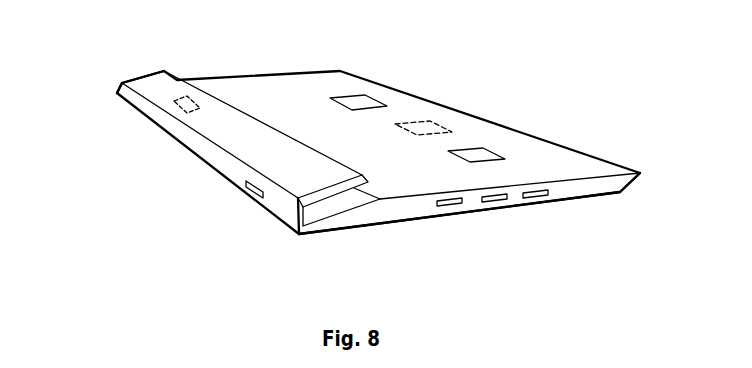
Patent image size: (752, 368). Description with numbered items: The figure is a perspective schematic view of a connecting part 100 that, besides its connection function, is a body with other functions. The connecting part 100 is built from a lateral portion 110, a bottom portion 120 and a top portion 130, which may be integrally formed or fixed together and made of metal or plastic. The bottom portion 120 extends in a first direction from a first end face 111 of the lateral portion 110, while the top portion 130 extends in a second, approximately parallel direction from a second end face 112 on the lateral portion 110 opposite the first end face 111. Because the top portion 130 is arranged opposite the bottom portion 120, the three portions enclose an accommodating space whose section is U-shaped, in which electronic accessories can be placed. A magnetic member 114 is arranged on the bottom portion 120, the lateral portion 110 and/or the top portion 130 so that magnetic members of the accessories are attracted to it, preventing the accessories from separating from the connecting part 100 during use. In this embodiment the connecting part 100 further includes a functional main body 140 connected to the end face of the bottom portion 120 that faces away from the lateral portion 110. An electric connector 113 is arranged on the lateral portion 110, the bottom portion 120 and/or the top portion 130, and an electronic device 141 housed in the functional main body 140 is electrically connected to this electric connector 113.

The connecting part 100 is at (312, 25).
The lateral portion 110 is at (153, 115).
The first end face 111 is at (298, 234).
The second end face 112 is at (297, 198).
The electric connector 113 is at (247, 186).
The magnetic member 114 is at (163, 72).
The bottom portion 120 is at (333, 226).
The top portion 130 is at (163, 130).
The functional main body 140 is at (455, 179).
The electronic device 141 is at (424, 130).